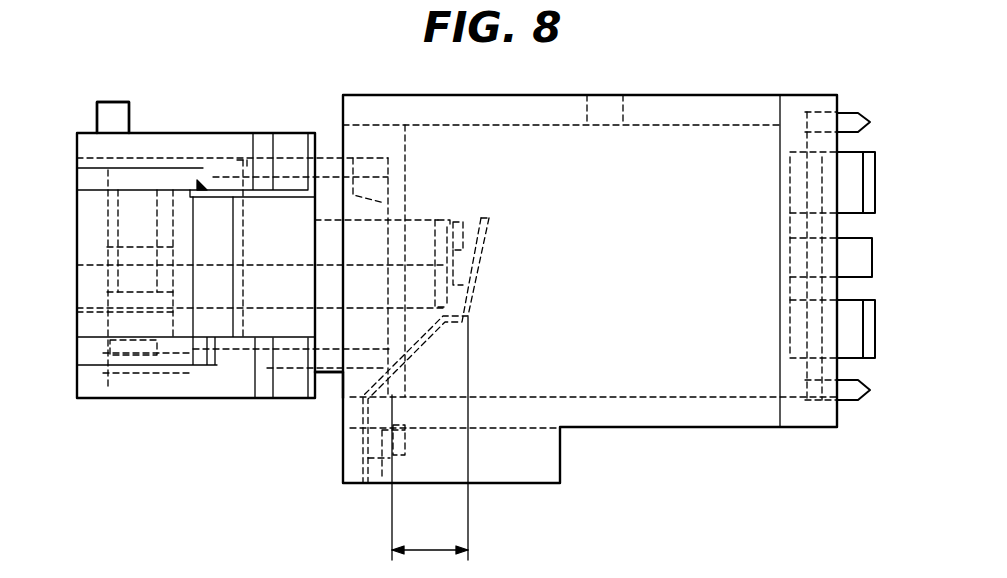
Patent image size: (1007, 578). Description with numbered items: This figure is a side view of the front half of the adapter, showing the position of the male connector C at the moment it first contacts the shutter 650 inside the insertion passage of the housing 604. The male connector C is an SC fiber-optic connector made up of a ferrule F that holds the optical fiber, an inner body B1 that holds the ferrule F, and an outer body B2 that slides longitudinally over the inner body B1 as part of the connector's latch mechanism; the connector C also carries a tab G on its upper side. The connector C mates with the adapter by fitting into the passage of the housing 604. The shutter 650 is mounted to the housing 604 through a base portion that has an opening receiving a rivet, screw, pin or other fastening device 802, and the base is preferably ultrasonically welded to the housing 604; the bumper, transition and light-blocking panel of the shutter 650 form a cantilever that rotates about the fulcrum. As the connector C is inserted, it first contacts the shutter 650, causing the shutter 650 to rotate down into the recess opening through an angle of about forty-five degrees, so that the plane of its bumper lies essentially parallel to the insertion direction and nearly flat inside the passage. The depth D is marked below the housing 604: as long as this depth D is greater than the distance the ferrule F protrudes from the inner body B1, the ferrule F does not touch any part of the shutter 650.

The housing 604 is at (724, 93).
The shutter 650 is at (488, 228).
The fastening device 802 is at (362, 440).
The male connector C is at (213, 125).
The latch tab G is at (97, 117).
The outer body B2 is at (282, 132).
The inner body B1 is at (331, 374).
The ferrule F is at (433, 215).
The depth D is at (430, 438).